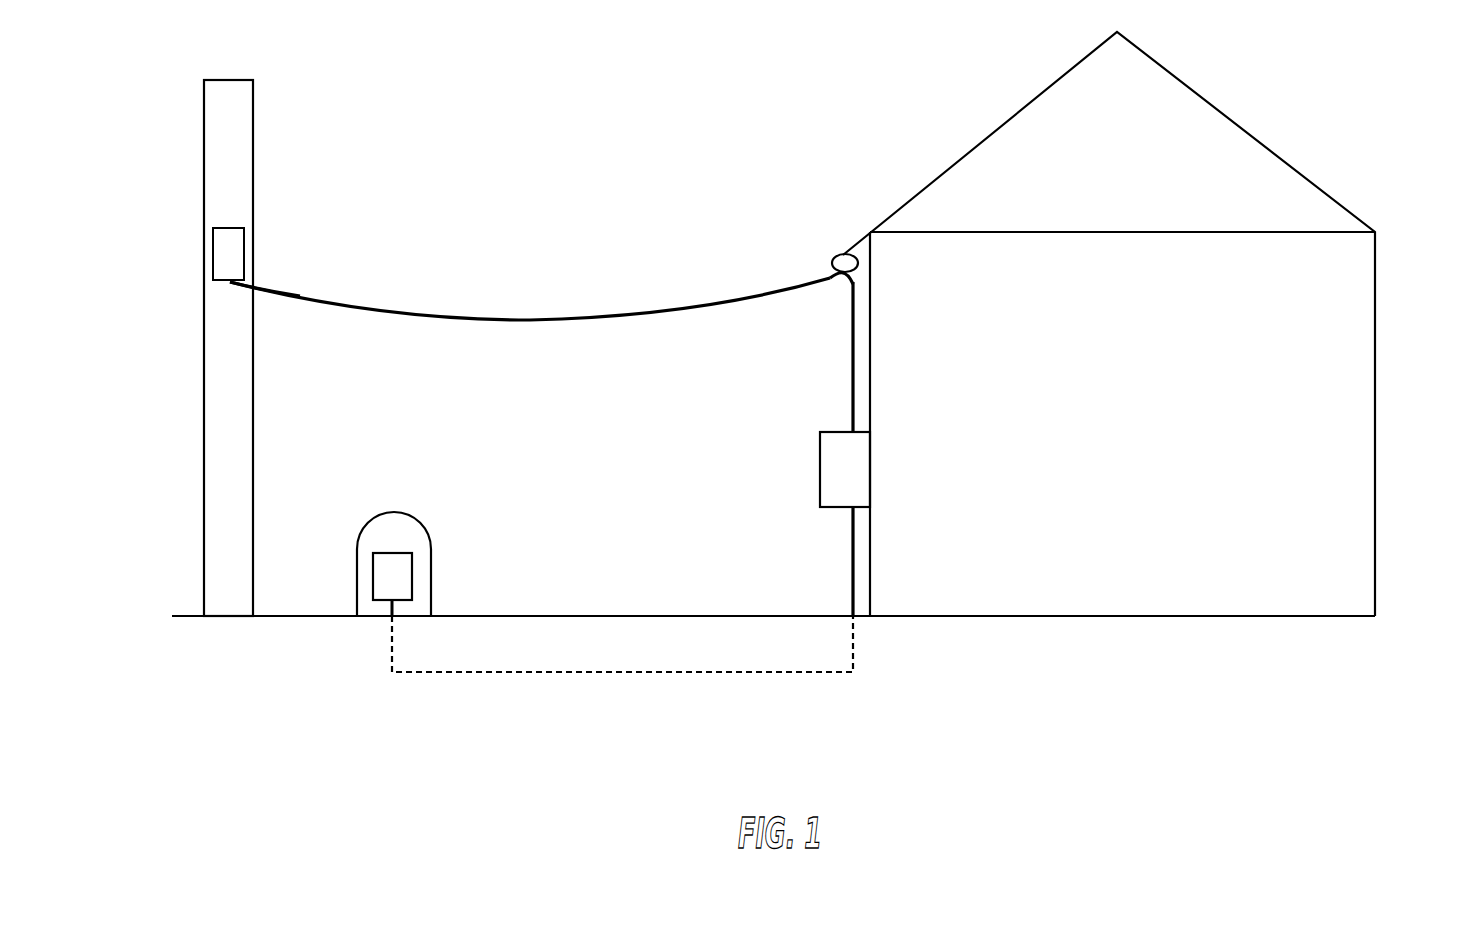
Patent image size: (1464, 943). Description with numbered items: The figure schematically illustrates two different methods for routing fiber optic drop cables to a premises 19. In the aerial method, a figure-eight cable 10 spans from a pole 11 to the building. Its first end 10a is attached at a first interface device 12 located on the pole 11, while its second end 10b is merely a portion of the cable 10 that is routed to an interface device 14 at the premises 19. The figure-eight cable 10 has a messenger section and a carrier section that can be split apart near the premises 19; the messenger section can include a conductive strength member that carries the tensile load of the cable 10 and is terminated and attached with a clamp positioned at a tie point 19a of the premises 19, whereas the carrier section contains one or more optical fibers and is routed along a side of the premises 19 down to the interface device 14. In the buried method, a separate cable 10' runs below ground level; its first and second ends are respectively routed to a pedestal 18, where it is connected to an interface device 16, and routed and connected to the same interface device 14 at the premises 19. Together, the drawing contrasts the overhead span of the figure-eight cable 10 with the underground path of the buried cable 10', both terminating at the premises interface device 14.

The figure-eight cable 10 is at (530, 338).
The first end 10a is at (275, 292).
The second end 10b is at (850, 420).
The cable 10' is at (622, 697).
The pole 11 is at (204, 361).
The first interface device 12 is at (228, 228).
The interface device 14 is at (820, 462).
The interface device 16 is at (393, 553).
The pedestal 18 is at (431, 585).
The premises 19 is at (1270, 290).
The tie point 19a is at (843, 254).